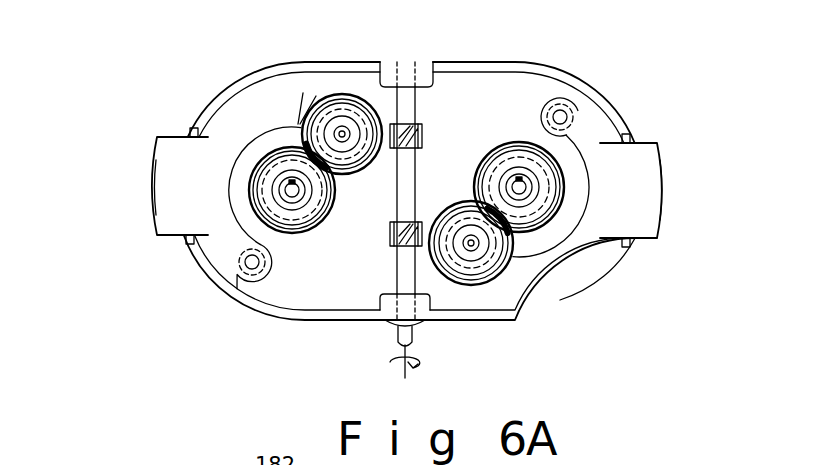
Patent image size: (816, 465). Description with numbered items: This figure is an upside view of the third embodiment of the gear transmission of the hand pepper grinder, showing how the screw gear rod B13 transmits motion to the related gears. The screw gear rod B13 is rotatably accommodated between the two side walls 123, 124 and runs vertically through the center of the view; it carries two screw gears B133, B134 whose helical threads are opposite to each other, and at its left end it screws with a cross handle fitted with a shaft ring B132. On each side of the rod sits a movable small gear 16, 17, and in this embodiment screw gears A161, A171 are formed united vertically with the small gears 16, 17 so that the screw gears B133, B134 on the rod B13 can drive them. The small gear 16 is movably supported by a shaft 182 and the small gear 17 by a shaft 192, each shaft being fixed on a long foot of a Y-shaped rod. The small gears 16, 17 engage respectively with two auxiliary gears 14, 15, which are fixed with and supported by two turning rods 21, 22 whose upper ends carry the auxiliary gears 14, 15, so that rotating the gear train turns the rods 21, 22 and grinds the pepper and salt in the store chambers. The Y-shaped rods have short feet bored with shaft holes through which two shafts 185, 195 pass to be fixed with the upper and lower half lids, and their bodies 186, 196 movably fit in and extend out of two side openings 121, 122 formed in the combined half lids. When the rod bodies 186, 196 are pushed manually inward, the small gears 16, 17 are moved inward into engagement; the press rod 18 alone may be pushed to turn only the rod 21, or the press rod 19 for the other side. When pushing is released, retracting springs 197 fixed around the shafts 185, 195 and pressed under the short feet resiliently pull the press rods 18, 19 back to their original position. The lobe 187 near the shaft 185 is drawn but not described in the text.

The auxiliary gear 14 is at (262, 148).
The screw gear A161 is at (303, 93).
The shaft 182 is at (342, 130).
The small gear 16 is at (370, 93).
The side wall 124 is at (465, 62).
The auxiliary gear 15 is at (546, 64).
The retracting spring 197 is at (567, 103).
The shaft 195 is at (565, 114).
The turning rod 22 is at (521, 185).
The press rod 19 is at (660, 145).
The rod body 196 is at (667, 198).
The side opening 122 is at (625, 243).
The shaft 192 is at (482, 253).
The screw gear A171 is at (493, 255).
The small gear 17 is at (478, 278).
The shaft ring B132 is at (422, 325).
The screw gear B133 is at (388, 238).
The screw gear rod B13 is at (418, 178).
The screw gear B134 is at (423, 133).
The side opening 121 is at (190, 130).
The press rod 18 is at (153, 141).
The rod body 186 is at (150, 194).
The shaft 185 is at (247, 263).
The boss lobe 187 is at (248, 273).
The turning rod 21 is at (292, 196).
The side wall 123 is at (338, 320).